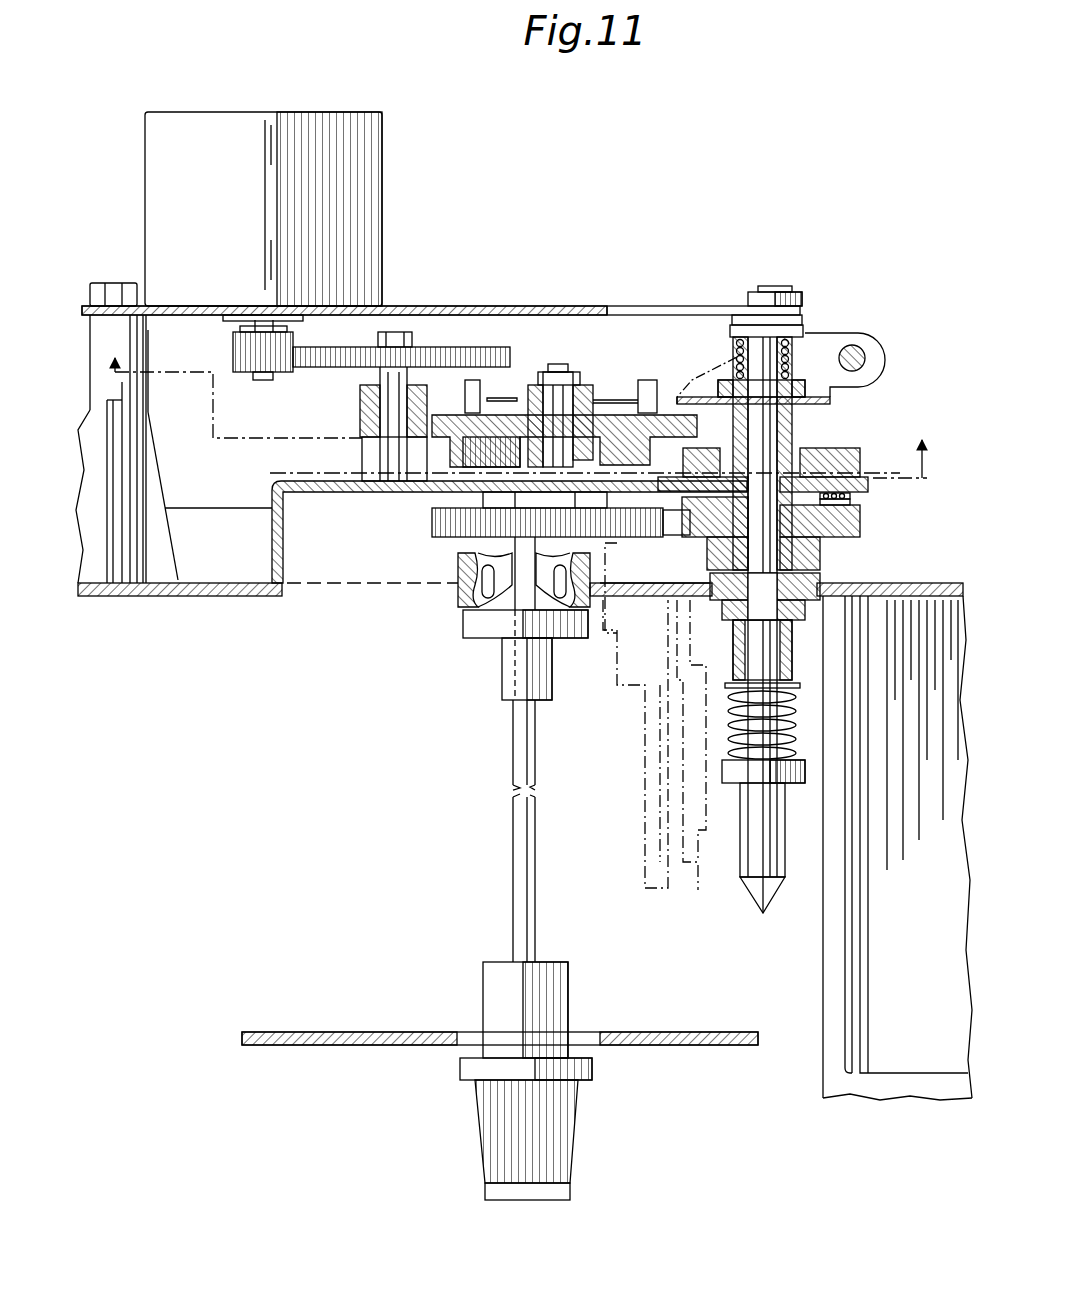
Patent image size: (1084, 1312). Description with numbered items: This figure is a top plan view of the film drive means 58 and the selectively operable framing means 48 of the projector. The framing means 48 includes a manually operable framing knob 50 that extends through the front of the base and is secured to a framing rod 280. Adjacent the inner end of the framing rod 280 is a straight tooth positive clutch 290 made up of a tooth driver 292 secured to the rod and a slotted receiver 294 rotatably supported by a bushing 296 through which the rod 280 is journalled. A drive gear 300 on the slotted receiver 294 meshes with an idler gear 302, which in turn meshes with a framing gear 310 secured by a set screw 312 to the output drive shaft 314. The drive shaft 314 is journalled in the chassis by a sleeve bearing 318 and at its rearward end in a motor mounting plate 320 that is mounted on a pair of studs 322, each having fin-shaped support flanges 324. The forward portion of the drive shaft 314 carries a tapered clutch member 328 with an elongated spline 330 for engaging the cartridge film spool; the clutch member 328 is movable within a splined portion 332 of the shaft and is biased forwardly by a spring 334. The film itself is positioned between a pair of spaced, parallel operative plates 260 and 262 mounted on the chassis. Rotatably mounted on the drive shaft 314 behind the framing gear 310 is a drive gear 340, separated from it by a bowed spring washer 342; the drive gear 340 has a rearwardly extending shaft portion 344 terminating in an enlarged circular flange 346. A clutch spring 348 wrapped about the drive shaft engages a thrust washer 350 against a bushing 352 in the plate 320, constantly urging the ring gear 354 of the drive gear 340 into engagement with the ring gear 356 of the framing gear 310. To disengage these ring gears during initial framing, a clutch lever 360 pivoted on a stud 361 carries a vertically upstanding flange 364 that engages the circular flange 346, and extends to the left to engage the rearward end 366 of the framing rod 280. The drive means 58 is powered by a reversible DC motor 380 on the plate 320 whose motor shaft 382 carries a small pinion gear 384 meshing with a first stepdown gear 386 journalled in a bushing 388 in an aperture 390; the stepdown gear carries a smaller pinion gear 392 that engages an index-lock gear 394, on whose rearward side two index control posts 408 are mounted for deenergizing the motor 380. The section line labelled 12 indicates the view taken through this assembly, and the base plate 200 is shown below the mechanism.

The drive motor 380 is at (382, 178).
The motor mounting plate 320 is at (418, 306).
The film drive means 58 is at (612, 290).
The studs 322 is at (112, 303).
The fin-shaped support flanges 324 is at (165, 554).
The base plate 200 is at (172, 598).
The aperture 390 is at (392, 490).
The section line 12 is at (519, 407).
The pinion gear 384 is at (233, 350).
The motor shaft 382 is at (259, 372).
The first stepdown gear 386 is at (462, 320).
The pinion gear 392 is at (362, 417).
The bushing 388 is at (362, 462).
The index-lock gear 394 is at (446, 415).
The rearward end of the framing rod 366 is at (523, 410).
The index control posts 408 is at (480, 383).
The bushing 352 is at (792, 294).
The thrust washer 350 is at (800, 320).
The clutch spring 348 is at (797, 340).
The shaft portion 344 is at (793, 437).
The output drive shaft 314 is at (793, 420).
The circular flange 346 is at (810, 388).
The clutch lever 360 is at (706, 380).
The vertically upstanding flange 364 is at (678, 395).
The stud 361 is at (866, 345).
The bowed spring washer 342 is at (830, 475).
The drive gear 340 is at (868, 486).
The ring gear 354 is at (852, 497).
The ring gear 356 is at (853, 504).
The framing gear 310 is at (866, 522).
The set screw 312 is at (820, 543).
The sleeve bearing 318 is at (805, 588).
The splined portion 332 is at (792, 665).
The spring 334 is at (797, 730).
The elongated spline 330 is at (788, 828).
The tapered clutch member 328 is at (790, 878).
The operative plate 260 is at (665, 888).
The operative plate 262 is at (692, 888).
The idler gear 302 is at (610, 545).
The bushing 296 is at (483, 499).
The drive gear 300 is at (432, 522).
The slotted receiver 294 is at (460, 578).
The straight tooth positive clutch 290 is at (457, 643).
The tooth driver 292 is at (502, 683).
The framing rod 280 is at (520, 850).
The framing means 48 is at (393, 652).
The framing knob 50 is at (553, 1196).